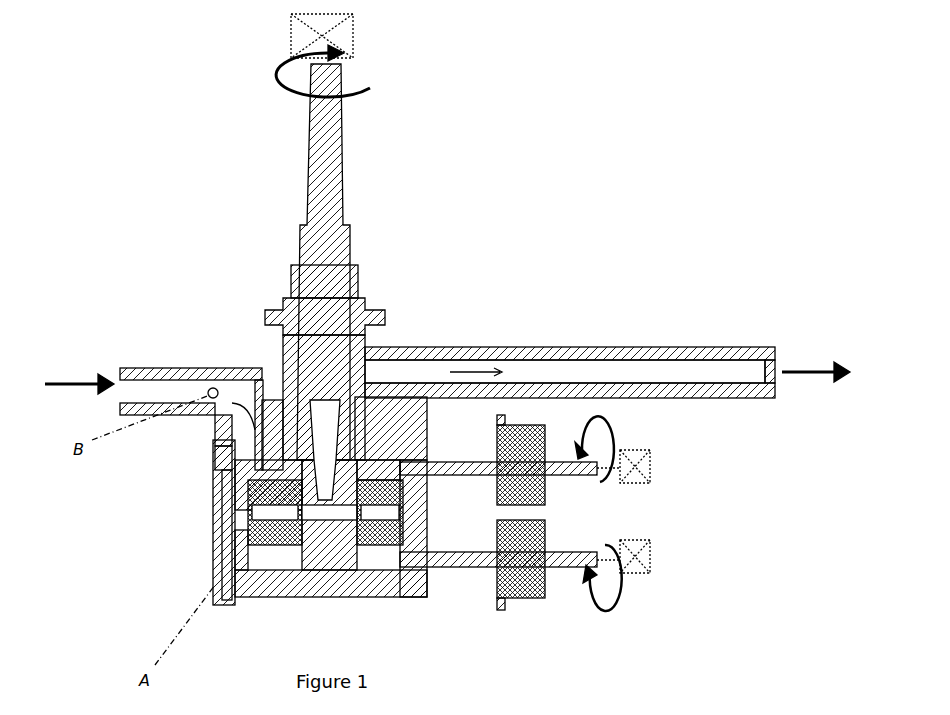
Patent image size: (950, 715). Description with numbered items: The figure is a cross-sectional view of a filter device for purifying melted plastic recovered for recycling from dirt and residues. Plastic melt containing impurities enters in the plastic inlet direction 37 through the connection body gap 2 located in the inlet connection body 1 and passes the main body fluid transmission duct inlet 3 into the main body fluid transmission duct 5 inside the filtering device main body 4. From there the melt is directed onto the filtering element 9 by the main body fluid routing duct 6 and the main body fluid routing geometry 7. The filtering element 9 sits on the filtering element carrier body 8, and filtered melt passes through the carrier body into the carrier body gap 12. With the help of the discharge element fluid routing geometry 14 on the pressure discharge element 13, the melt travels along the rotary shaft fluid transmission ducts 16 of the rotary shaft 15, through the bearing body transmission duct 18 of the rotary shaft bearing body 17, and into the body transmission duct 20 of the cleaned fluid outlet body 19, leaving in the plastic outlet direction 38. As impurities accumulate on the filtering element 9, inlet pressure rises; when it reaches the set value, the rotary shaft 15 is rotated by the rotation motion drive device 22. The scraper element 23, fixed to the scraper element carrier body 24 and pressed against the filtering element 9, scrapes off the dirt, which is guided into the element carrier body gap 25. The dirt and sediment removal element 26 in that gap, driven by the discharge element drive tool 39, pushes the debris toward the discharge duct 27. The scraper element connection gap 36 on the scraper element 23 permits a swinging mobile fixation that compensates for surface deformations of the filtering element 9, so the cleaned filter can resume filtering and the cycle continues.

The inlet connection body 1 is at (122, 368).
The connection body gap 2 is at (120, 395).
The main body fluid transmission duct inlet 3 is at (215, 440).
The filtering device main body 4 is at (255, 465).
The main body fluid transmission duct 5 is at (240, 540).
The main body fluid routing duct 6 is at (220, 480).
The main body fluid routing geometry 7 is at (236, 582).
The filtering element carrier body 8 is at (240, 505).
The filtering element 9 is at (226, 500).
The carrier body gap 12 is at (257, 597).
The pressure discharge element 13 is at (290, 597).
The discharge element fluid routing geometry 14 is at (322, 597).
The rotary shaft 15 is at (345, 205).
The rotary shaft fluid transmission ducts 16 is at (385, 318).
The rotary shaft bearing body 17 is at (362, 298).
The bearing body transmission duct 18 is at (365, 355).
The cleaned fluid outlet body 19 is at (555, 347).
The body transmission duct 20 is at (640, 380).
The rotation motion drive device 22 is at (340, 45).
The scraper element 23 is at (390, 597).
The scraper element carrier body 24 is at (418, 597).
The element carrier body gap 25 is at (460, 567).
The dirt and sediment removal element 26 is at (497, 598).
The discharge duct 27 is at (501, 610).
The scraper element connection gap 36 is at (650, 466).
The plastic inlet direction 37 is at (75, 380).
The plastic outlet direction 38 is at (825, 376).
The discharge element drive tool 39 is at (650, 560).